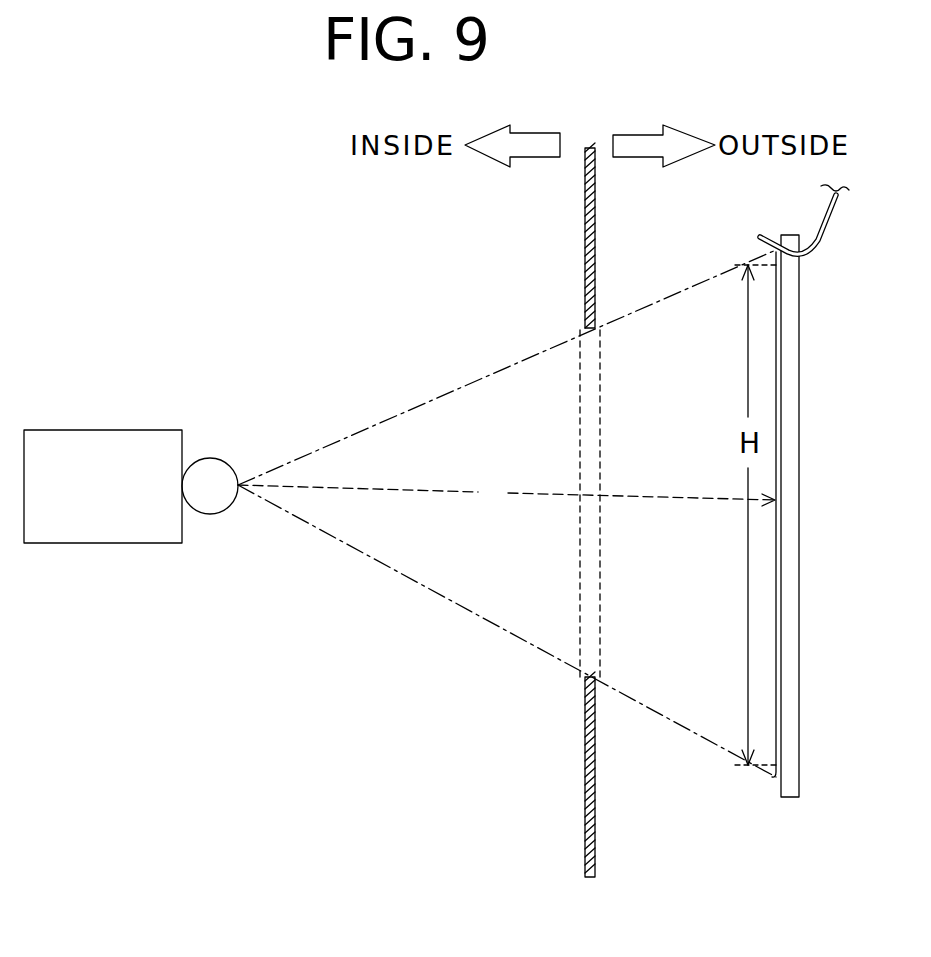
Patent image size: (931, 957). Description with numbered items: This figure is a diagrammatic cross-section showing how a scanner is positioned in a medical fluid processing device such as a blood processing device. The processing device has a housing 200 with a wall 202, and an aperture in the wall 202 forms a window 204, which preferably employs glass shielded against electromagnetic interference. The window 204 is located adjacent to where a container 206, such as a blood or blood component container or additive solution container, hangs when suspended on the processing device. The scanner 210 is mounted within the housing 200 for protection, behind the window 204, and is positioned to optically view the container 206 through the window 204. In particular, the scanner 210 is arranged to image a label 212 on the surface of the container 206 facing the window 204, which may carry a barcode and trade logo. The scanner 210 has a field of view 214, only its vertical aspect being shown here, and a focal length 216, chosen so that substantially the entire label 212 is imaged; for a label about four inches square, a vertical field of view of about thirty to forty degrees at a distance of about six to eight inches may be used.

The housing 200 is at (573, 240).
The wall 202 is at (595, 200).
The window 204 is at (585, 328).
The container 206 is at (800, 340).
The scanner 210 is at (108, 515).
The label 212 is at (776, 681).
The field of view 214 is at (320, 447).
The focal length 216 is at (440, 490).